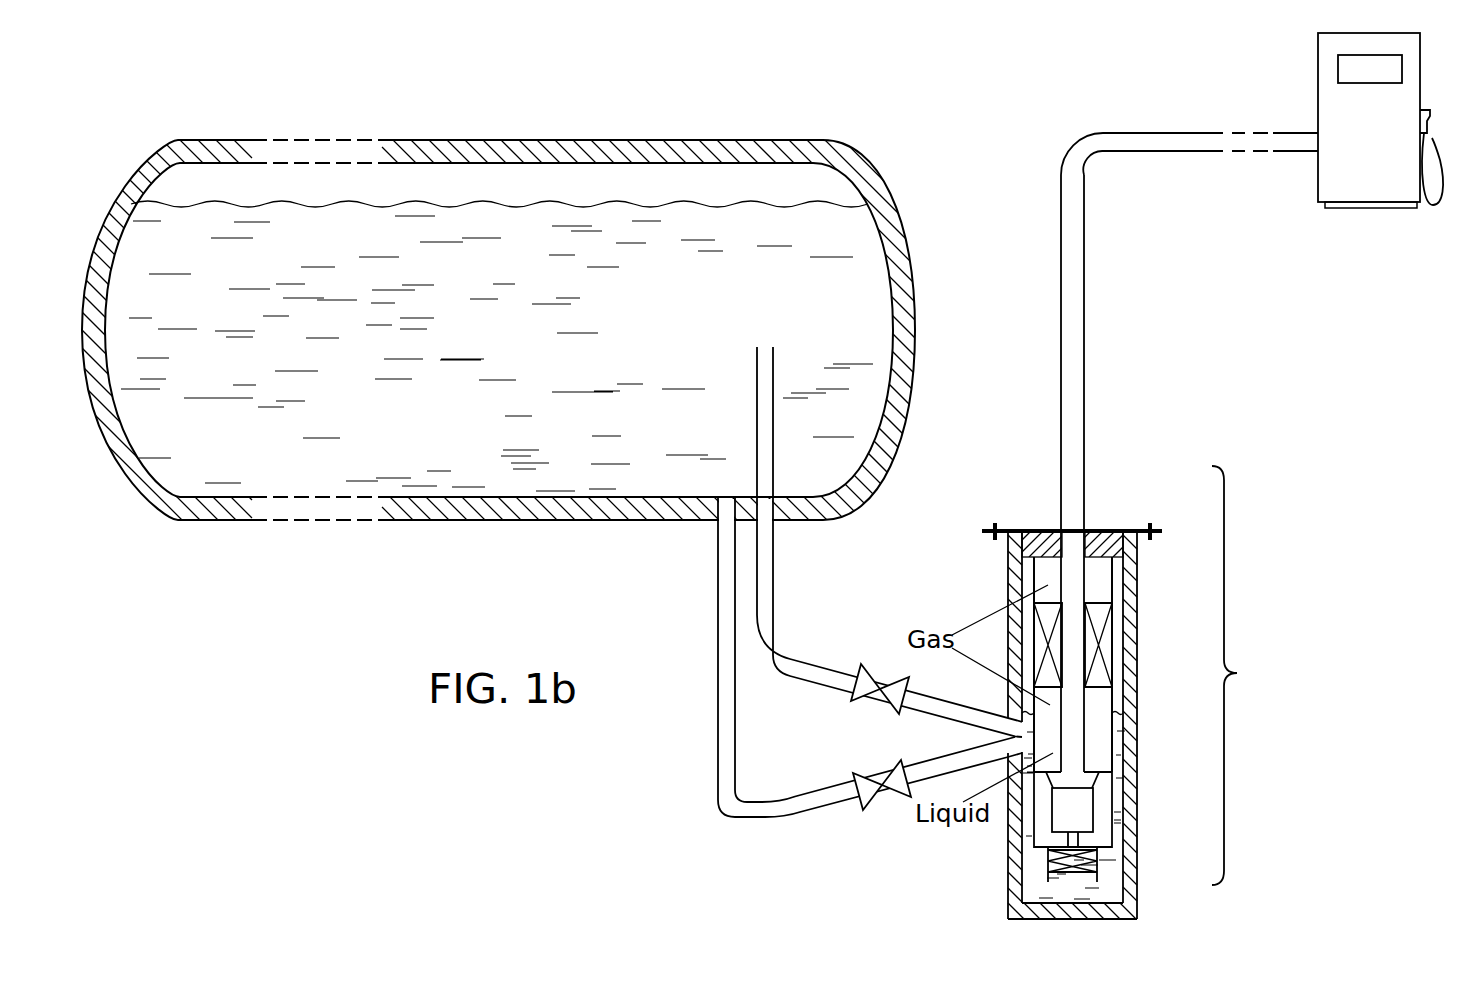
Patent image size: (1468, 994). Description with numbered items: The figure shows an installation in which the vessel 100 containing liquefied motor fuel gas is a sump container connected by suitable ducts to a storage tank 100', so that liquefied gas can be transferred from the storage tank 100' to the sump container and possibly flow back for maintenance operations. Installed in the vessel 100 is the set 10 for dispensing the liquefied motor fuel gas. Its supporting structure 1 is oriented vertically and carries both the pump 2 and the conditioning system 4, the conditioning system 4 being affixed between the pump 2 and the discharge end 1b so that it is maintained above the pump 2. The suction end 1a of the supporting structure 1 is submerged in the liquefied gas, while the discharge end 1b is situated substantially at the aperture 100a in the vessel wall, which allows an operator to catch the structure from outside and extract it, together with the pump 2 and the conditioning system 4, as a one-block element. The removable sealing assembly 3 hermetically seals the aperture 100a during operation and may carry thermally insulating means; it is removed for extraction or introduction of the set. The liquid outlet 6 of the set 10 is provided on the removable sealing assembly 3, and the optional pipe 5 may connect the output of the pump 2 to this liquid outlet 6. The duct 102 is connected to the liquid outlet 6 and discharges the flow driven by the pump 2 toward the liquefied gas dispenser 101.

The supporting structure 1 is at (1113, 703).
The suction end of the supporting structure 1a is at (1095, 872).
The discharge end of the supporting structure 1b is at (1112, 577).
The pump 2 is at (1093, 807).
The removable sealing assembly 3 is at (1097, 531).
The conditioning system 4 is at (1103, 650).
The pipe 5 is at (1085, 758).
The liquid outlet of the set 6 is at (1085, 510).
The set for dispensing the liquefied motor fuel gas 10 is at (1245, 675).
The vessel containing liquefied motor fuel gas 100 is at (1030, 725).
The storage tank 100' is at (495, 497).
The aperture in a wall of the vessel 100a is at (1007, 550).
The liquefied gas dispenser 101 is at (1318, 90).
The duct for supplying the dispenser with liquefied gas 102 is at (1142, 152).